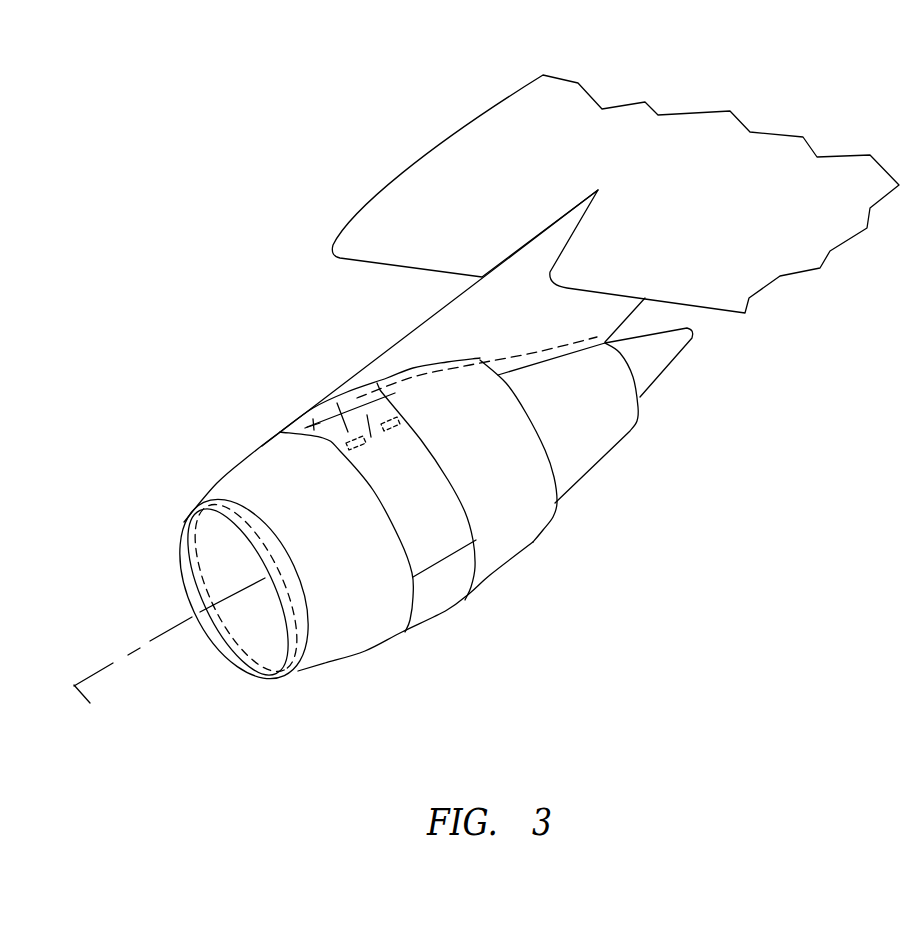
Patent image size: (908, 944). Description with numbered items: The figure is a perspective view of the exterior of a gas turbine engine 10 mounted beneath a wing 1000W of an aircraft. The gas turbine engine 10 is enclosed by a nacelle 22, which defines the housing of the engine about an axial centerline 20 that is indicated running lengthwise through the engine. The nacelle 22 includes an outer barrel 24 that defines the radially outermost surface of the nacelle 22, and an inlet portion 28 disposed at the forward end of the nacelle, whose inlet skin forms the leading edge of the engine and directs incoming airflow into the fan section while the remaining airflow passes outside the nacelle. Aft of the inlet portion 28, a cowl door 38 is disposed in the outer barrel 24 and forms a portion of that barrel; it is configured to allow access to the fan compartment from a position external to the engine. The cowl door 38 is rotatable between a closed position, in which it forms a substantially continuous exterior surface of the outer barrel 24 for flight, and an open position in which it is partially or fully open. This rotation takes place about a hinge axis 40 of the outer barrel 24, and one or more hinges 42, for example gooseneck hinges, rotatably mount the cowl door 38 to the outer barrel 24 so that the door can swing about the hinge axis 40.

The wing 1000W is at (395, 133).
The gas turbine engine 10 is at (240, 346).
The axial centerline 20 is at (96, 708).
The nacelle 22 is at (523, 597).
The outer barrel 24 is at (398, 661).
The inlet portion 28 is at (328, 640).
The cowl door 38 is at (433, 551).
The hinge axis 40 is at (337, 405).
The hinge 42 is at (307, 422).